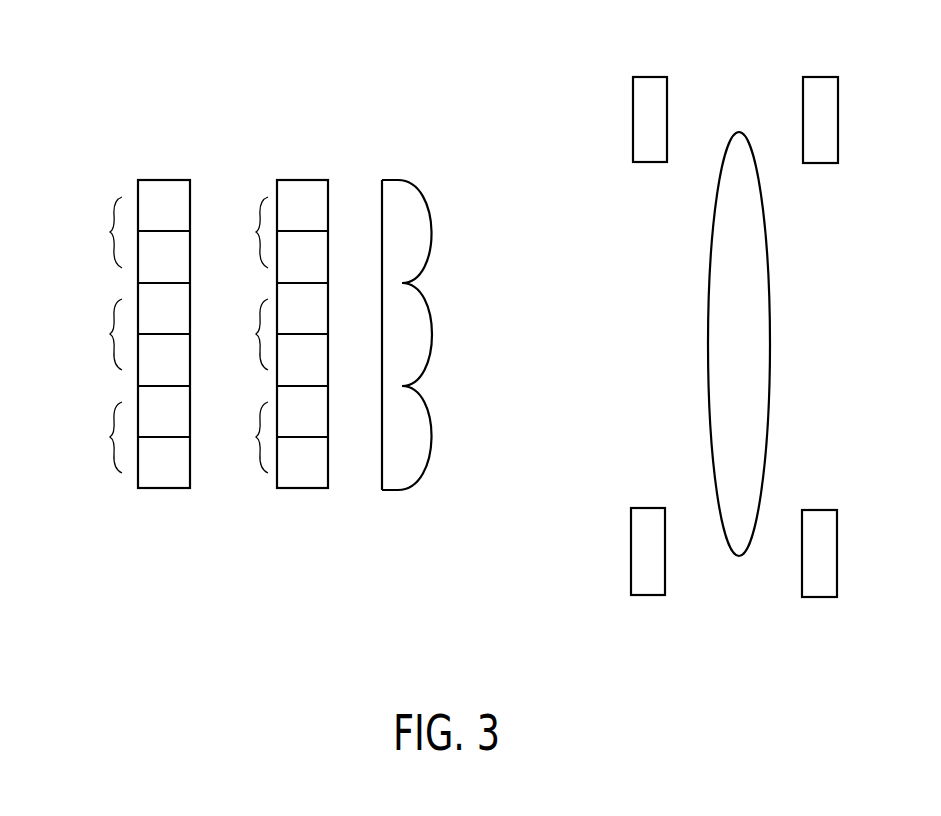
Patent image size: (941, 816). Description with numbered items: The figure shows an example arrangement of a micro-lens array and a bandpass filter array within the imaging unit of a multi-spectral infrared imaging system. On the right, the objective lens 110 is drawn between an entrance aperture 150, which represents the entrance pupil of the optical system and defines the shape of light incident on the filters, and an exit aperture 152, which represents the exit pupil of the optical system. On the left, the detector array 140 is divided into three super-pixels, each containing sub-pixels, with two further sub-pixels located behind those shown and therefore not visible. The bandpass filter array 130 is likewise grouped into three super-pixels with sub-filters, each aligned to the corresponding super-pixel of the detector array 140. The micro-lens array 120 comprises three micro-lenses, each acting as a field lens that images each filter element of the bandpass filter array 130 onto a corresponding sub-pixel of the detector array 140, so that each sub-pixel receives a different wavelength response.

The objective lens 110 is at (738, 557).
The micro-lens array 120 is at (390, 493).
The bandpass filter array 130 is at (288, 492).
The detector array 140 is at (144, 492).
The entrance aperture 150 is at (823, 77).
The exit aperture 152 is at (647, 77).